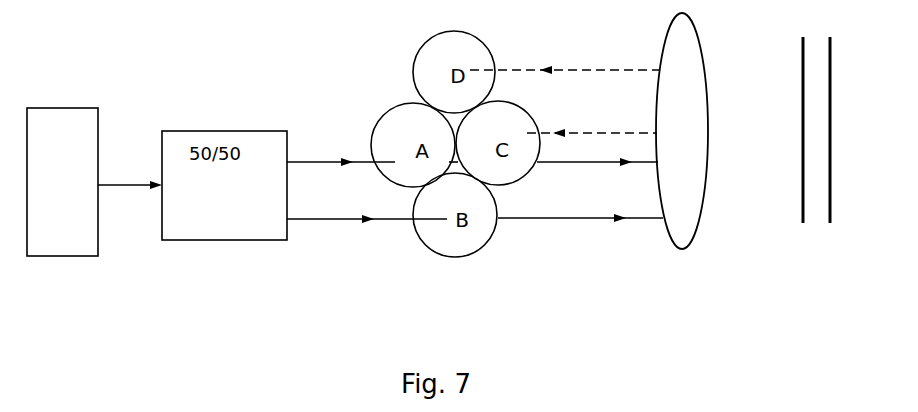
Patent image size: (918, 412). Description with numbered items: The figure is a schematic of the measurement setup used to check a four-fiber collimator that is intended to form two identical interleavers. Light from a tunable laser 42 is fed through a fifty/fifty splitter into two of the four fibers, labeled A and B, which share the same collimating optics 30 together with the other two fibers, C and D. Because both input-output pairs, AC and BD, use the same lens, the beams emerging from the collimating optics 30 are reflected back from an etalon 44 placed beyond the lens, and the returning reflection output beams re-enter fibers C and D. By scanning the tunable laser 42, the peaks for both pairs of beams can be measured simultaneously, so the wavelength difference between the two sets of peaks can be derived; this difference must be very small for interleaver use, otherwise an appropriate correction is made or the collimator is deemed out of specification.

The tunable laser 42 is at (52, 125).
The collimating optics 30 is at (692, 72).
The etalon 44 is at (838, 235).